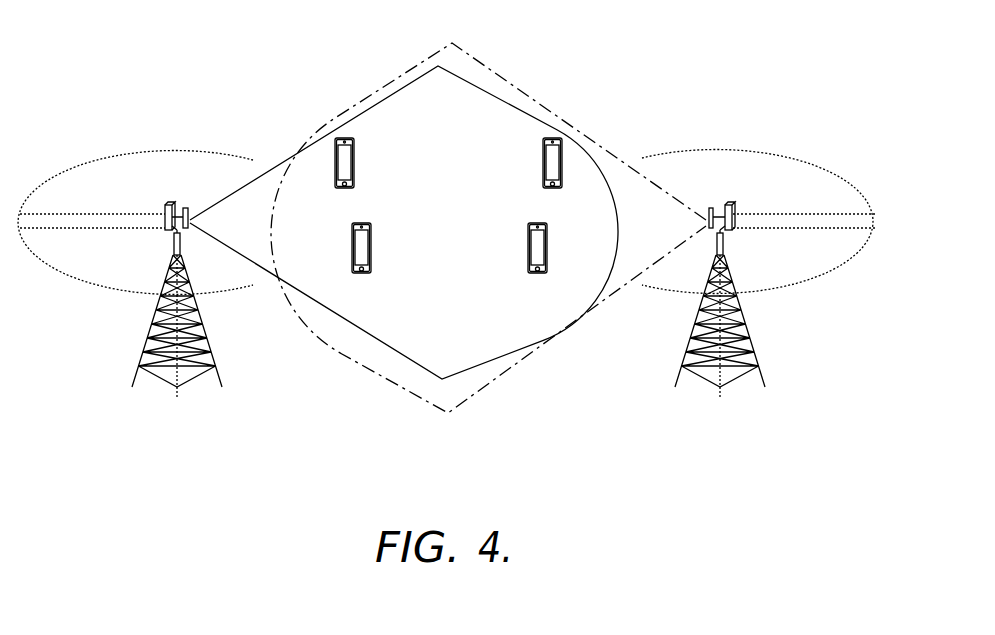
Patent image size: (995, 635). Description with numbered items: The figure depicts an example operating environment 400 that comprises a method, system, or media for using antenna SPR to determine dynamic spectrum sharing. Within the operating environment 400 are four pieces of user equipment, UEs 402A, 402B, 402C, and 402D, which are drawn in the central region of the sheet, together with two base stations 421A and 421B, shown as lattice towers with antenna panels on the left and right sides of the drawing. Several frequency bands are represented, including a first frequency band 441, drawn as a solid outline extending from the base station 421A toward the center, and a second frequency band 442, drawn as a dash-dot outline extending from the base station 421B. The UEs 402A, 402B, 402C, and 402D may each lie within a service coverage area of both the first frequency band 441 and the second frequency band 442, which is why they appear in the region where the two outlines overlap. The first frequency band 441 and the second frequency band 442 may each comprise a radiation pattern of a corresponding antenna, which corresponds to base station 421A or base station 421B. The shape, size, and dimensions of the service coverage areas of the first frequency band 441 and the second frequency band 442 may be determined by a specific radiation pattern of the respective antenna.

The operating environment 400 is at (715, 79).
The UE 402A is at (356, 166).
The UE 402B is at (543, 147).
The UE 402C is at (362, 274).
The UE 402D is at (531, 275).
The base station 421A is at (141, 372).
The base station 421B is at (756, 372).
The first frequency band 441 is at (500, 358).
The second frequency band 442 is at (535, 101).